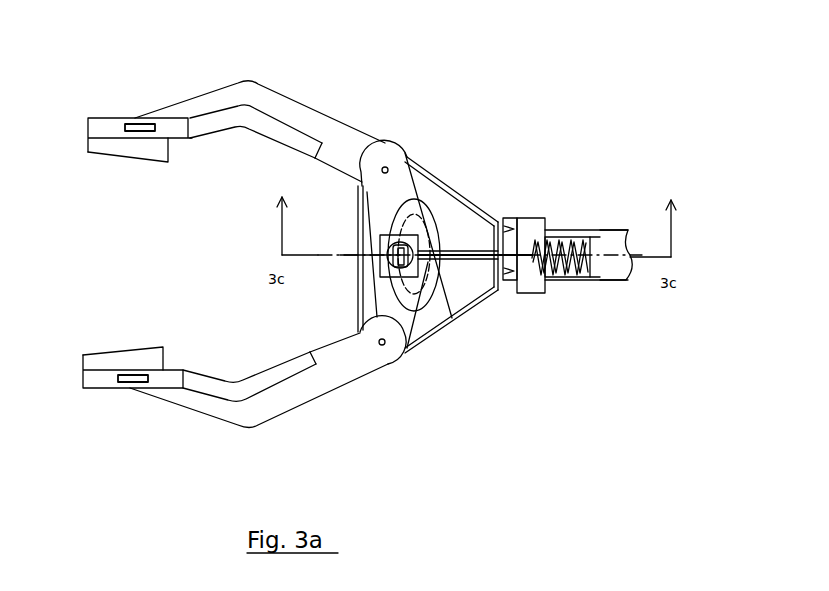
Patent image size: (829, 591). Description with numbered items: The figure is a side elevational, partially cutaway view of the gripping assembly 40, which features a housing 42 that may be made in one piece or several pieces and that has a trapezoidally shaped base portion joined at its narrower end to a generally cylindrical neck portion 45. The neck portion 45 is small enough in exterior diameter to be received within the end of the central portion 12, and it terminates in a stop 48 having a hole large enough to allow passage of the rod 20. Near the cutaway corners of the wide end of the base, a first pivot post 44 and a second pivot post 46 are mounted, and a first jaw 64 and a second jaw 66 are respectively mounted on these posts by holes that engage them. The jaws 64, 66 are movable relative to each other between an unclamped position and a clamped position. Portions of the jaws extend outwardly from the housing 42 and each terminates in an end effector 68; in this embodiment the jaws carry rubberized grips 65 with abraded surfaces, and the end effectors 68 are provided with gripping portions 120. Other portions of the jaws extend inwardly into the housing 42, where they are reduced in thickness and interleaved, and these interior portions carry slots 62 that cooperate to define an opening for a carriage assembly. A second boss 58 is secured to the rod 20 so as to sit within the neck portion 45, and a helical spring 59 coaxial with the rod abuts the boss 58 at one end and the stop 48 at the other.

The gripping assembly 40 is at (534, 73).
The housing 42 is at (424, 164).
The first pivot post 44 is at (384, 143).
The second pivot post 46 is at (382, 345).
The slots 62 is at (412, 222).
The rod 20 is at (457, 258).
The central portion 12 is at (562, 283).
The second boss 58 is at (535, 220).
The helical spring 59 is at (567, 235).
The neck portion 45 is at (576, 285).
The stop 48 is at (612, 226).
The first jaw 64 is at (259, 80).
The second jaw 66 is at (239, 428).
The rubberized grips 65 is at (214, 124).
The end effector 68 is at (98, 128).
The gripping portions 120 is at (115, 150).